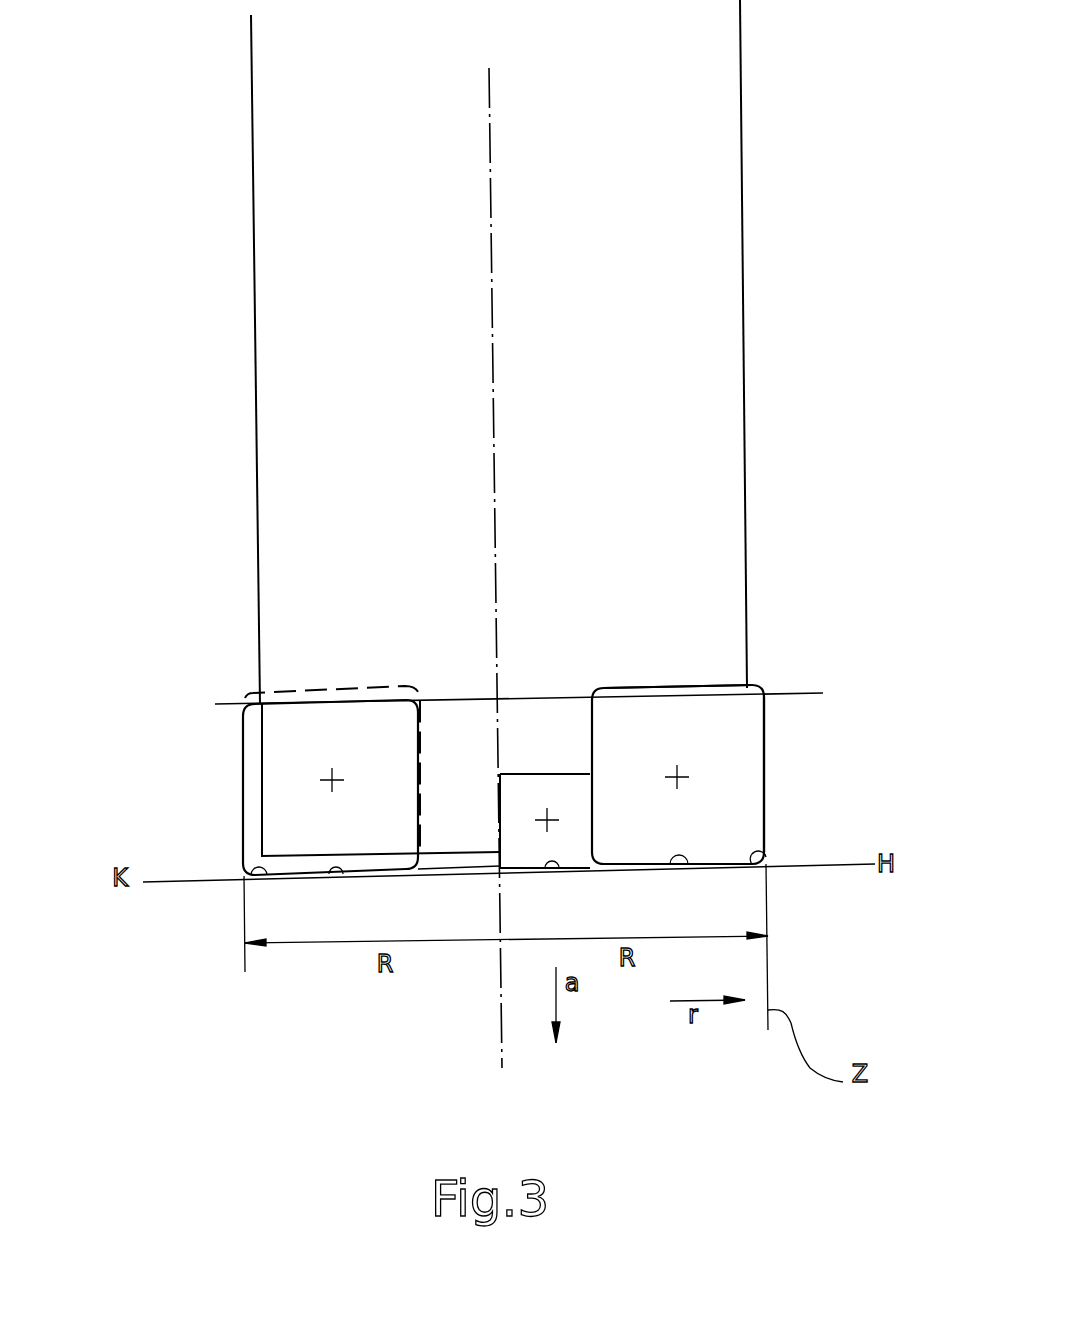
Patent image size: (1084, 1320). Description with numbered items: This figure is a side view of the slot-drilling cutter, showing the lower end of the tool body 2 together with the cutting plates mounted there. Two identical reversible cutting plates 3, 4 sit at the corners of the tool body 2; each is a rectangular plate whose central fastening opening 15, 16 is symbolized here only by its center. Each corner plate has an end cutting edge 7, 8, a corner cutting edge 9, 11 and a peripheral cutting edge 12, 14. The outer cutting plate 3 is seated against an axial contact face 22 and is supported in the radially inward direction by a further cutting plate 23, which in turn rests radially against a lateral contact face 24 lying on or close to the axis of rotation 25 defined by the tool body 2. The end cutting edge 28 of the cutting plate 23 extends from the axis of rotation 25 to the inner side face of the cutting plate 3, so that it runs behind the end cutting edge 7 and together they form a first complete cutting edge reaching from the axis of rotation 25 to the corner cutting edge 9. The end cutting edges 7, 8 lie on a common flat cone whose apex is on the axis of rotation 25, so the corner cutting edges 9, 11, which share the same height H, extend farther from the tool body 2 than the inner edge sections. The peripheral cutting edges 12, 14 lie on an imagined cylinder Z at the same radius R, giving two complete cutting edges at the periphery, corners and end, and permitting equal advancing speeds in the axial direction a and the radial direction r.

The tool body 2 is at (707, 485).
The cutting plate 3 is at (730, 815).
The cutting plate 4 is at (257, 823).
The end cutting edge 7 is at (688, 865).
The end cutting edge 8 is at (343, 877).
The corner cutting edge 9 is at (760, 863).
The corner cutting edge 11 is at (267, 873).
The peripheral cutting edge 12 is at (765, 768).
The peripheral cutting edge 14 is at (237, 743).
The central fastening opening 15 is at (688, 767).
The central fastening opening 16 is at (345, 770).
The axial contact face 22 is at (657, 687).
The cutting plate 23 is at (527, 798).
The lateral contact face 24 is at (500, 803).
The axis of rotation 25 is at (502, 1048).
The end cutting edge 28 is at (560, 868).